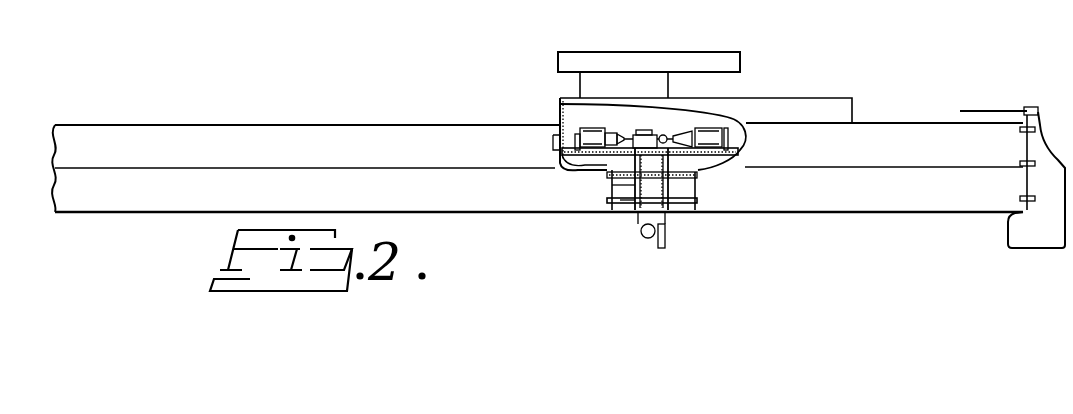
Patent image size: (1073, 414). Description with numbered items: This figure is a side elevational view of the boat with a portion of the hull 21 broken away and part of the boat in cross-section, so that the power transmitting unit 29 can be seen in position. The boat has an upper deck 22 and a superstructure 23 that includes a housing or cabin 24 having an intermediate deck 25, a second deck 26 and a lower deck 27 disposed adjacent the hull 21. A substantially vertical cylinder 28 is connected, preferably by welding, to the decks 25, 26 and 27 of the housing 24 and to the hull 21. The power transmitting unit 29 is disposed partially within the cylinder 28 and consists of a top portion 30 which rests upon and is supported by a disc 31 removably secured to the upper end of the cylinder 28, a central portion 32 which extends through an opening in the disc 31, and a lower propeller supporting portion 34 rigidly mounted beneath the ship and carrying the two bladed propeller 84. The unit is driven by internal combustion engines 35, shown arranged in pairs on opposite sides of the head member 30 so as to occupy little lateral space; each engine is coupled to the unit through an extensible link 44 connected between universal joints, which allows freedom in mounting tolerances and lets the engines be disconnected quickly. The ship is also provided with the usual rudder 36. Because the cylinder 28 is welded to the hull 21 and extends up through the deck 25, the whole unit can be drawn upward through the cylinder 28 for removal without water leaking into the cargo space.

The hull 21 is at (826, 196).
The upper deck 22 is at (267, 147).
The superstructure 23 is at (622, 85).
The housing or cabin 24 is at (602, 120).
The intermediate deck 25 is at (562, 128).
The second deck 26 is at (607, 190).
The lower deck 27 is at (617, 210).
The vertical cylinder 28 is at (687, 180).
The power transmitting unit 29 is at (627, 212).
The top portion 30 is at (652, 130).
The disc 31 is at (697, 165).
The central portion 32 is at (607, 168).
The lower propeller supporting portion 34 is at (648, 240).
The engine 35 is at (712, 133).
The rudder 36 is at (1037, 232).
The extensible link 44 is at (666, 135).
The propeller 84 is at (663, 240).